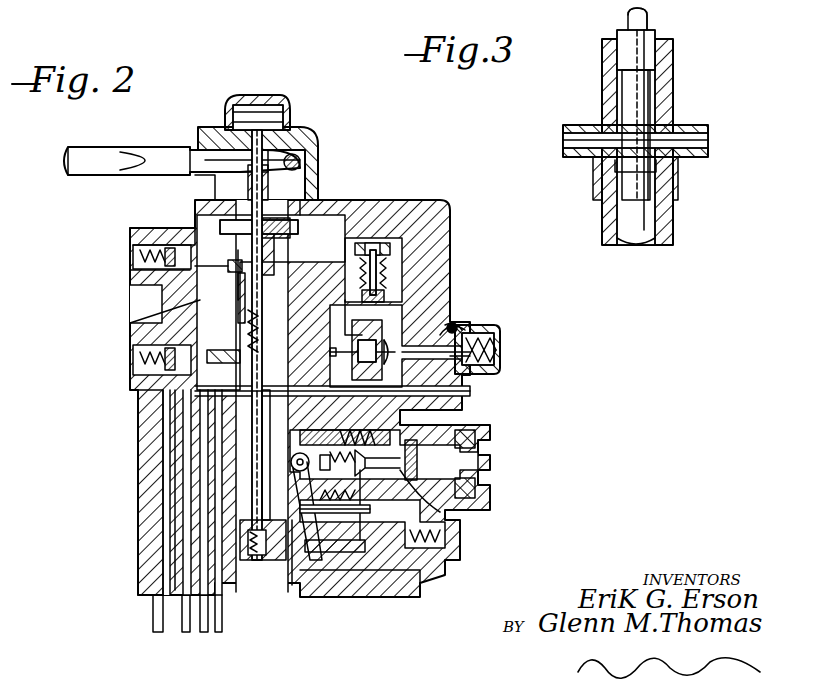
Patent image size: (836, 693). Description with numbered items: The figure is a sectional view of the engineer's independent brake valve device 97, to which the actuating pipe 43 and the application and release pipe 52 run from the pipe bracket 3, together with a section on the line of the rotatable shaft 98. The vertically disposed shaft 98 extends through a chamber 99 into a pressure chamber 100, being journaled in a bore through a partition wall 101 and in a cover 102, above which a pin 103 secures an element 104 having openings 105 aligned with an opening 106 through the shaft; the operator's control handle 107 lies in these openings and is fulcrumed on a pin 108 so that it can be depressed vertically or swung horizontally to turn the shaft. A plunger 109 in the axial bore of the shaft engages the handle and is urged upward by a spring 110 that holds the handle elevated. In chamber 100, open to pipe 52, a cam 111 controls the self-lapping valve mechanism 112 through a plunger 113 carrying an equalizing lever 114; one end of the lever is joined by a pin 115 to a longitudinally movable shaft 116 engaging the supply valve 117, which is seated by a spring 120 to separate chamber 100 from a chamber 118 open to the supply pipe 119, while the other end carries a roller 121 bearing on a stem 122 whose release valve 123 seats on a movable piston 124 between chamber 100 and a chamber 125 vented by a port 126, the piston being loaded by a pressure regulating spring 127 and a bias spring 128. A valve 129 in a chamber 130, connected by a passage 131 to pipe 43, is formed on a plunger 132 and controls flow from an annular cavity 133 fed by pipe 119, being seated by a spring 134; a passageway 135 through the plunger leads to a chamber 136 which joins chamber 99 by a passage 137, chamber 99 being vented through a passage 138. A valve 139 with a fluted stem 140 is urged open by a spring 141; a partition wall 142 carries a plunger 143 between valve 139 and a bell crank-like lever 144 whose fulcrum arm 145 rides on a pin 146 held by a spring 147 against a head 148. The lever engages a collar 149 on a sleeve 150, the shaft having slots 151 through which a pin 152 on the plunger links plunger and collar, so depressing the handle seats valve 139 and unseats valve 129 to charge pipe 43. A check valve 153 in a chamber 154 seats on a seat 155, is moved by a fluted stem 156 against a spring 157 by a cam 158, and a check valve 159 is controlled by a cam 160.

In FIG. 2, the pipe bracket 3 is at (278, 300).
In FIG. 2, the actuating pipe 43 is at (188, 628).
In FIG. 2, the application and release pipe 52 is at (222, 627).
In FIG. 2, the engineer's independent brake valve device 97 is at (128, 500).
In FIG. 2, the rotatable shaft 98 is at (240, 480).
In FIG. 3, the rotatable shaft 98 is at (675, 232).
In FIG. 2, the chamber 99 is at (160, 305).
In FIG. 2, the pressure chamber 100 is at (315, 590).
In FIG. 2, the partition wall 101 is at (455, 420).
In FIG. 2, the cover 102 is at (420, 205).
In FIG. 2, the pin 103 is at (258, 122).
In FIG. 2, the element 104 is at (308, 135).
In FIG. 2, the opening 105 is at (295, 155).
In FIG. 2, the opening 106 is at (272, 127).
In FIG. 2, the operator's control handle 107 is at (108, 155).
In FIG. 2, the pin (fulcrum pin) / axial bore 108 is at (265, 200).
In FIG. 2, the plunger 109 is at (252, 310).
In FIG. 3, the plunger 109 is at (640, 45).
In FIG. 2, the spring 110 is at (262, 330).
In FIG. 2, the cam 111 is at (280, 570).
In FIG. 2, the self-lapping fluid pressure supply and release valve mechanism 112 is at (492, 500).
In FIG. 2, the plunger 113 is at (300, 585).
In FIG. 2, the equalizing lever 114 is at (345, 540).
In FIG. 2, the pin 115 is at (318, 555).
In FIG. 2, the longitudinally movable shaft 116 is at (380, 565).
In FIG. 2, the fluid pressure supply valve 117 is at (390, 580).
In FIG. 2, the chamber 118 is at (425, 578).
In FIG. 2, the fluid pressure supply pipe 119 is at (205, 628).
In FIG. 2, the spring 120 is at (460, 545).
In FIG. 2, the roller 121 is at (262, 480).
In FIG. 2, the stem 122 is at (303, 458).
In FIG. 2, the fluid pressure release valve 123 is at (490, 462).
In FIG. 2, the movable piston 124 is at (488, 440).
In FIG. 2, the chamber 125 is at (490, 480).
In FIG. 2, the port 126 is at (482, 430).
In FIG. 2, the pressure regulating spring 127 is at (440, 512).
In FIG. 2, the bias spring 128 is at (370, 545).
In FIG. 2, the valve 129 is at (470, 330).
In FIG. 2, the chamber 130 is at (495, 328).
In FIG. 2, the passage 131 is at (183, 418).
In FIG. 2, the plunger 132 is at (463, 297).
In FIG. 2, the annular cavity 133 is at (458, 322).
In FIG. 2, the spring 134 is at (498, 338).
In FIG. 2, the passageway 135 is at (468, 392).
In FIG. 2, the chamber 136 is at (448, 318).
In FIG. 2, the passage 137 is at (352, 330).
In FIG. 2, the passage 138 is at (302, 205).
In FIG. 2, the valve 139 is at (379, 362).
In FIG. 2, the stem 140 is at (492, 345).
In FIG. 2, the spring 141 is at (490, 360).
In FIG. 2, the partition wall 142 is at (352, 372).
In FIG. 2, the plunger 143 is at (330, 352).
In FIG. 2, the bell crank-like lever 144 is at (362, 294).
In FIG. 2, the fulcrum arm 145 is at (360, 265).
In FIG. 2, the pin 146 is at (440, 250).
In FIG. 2, the spring 147 is at (430, 280).
In FIG. 2, the head 148 is at (372, 243).
In FIG. 2, the collar 149 is at (270, 185).
In FIG. 3, the collar 149 is at (704, 130).
In FIG. 2, the sleeve 150 is at (280, 235).
In FIG. 3, the sleeve 150 is at (680, 182).
In FIG. 3, the slots 151 is at (662, 160).
In FIG. 3, the pin 152 is at (710, 141).
In FIG. 2, the check valve 153 is at (128, 236).
In FIG. 2, the chamber 154 is at (155, 285).
In FIG. 2, the seat 155 is at (185, 200).
In FIG. 2, the fluted stem 156 is at (212, 262).
In FIG. 2, the spring 157 is at (138, 258).
In FIG. 2, the cam 158 is at (243, 286).
In FIG. 2, the check valve 159 is at (140, 375).
In FIG. 2, the cam 160 is at (215, 350).